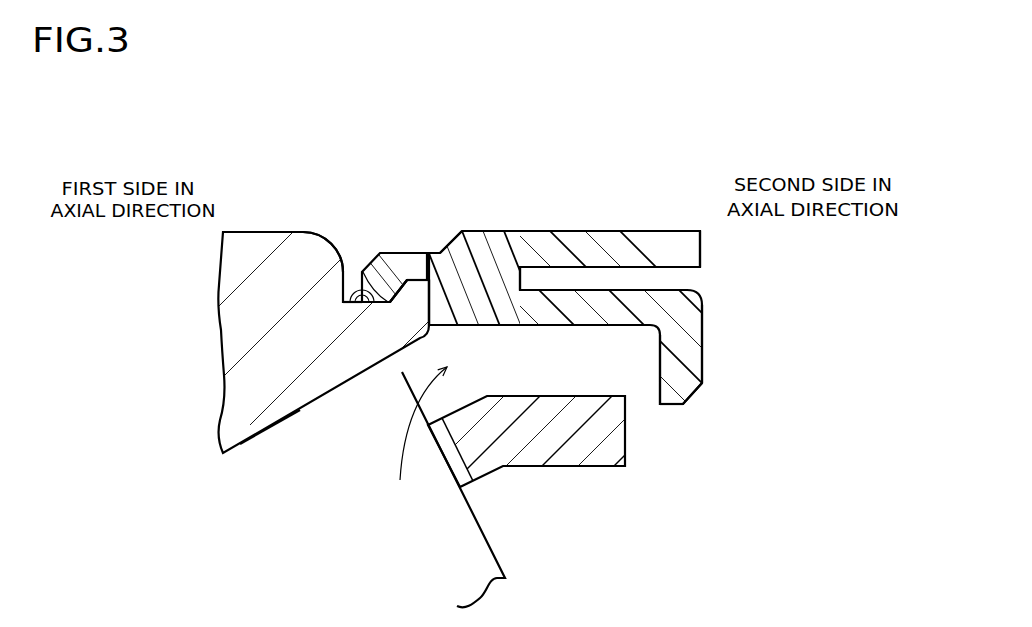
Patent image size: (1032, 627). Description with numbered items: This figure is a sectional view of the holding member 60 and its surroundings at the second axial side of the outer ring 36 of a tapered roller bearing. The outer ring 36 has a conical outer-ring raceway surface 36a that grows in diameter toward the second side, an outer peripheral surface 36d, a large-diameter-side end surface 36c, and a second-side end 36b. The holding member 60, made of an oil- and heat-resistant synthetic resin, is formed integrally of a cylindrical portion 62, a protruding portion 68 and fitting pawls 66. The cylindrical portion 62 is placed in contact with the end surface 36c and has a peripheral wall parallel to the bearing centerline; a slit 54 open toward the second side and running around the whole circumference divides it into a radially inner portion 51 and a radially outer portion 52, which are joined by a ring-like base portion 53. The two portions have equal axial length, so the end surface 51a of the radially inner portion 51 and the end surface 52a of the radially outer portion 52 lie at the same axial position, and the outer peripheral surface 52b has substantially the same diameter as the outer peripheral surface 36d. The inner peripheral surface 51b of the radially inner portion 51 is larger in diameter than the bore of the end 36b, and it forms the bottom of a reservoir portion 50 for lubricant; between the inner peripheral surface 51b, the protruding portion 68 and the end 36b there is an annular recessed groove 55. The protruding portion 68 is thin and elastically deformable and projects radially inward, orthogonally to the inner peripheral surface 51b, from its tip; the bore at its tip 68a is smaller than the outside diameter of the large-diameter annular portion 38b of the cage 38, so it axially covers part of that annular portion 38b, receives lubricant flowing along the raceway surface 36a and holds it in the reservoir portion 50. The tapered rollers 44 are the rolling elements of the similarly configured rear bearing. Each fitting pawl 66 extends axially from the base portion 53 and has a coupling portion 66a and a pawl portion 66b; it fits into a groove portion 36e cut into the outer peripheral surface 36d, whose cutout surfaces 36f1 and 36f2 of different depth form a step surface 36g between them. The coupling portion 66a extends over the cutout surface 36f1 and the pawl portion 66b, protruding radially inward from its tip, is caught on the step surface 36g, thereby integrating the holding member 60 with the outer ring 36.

The outer ring 36 is at (246, 258).
The outer-ring raceway surface 36a is at (272, 421).
The second-side end 36b is at (370, 334).
The large-diameter-side end surface 36c is at (430, 300).
The outer peripheral surface 36d is at (273, 232).
The groove portion 36e is at (351, 267).
The cutout surface 36f1 is at (423, 254).
The cutout surface 36f2 is at (350, 305).
The step surface 36g is at (352, 292).
The fitting pawl 66 is at (380, 255).
The coupling portion 66a is at (405, 253).
The pawl portion 66b is at (375, 281).
The holding member 60 is at (458, 230).
The cylindrical portion 62 is at (537, 133).
The base portion 53 is at (498, 268).
The radially outer portion 52 is at (572, 247).
The radially inner portion 51 is at (600, 310).
The axially-second-side end surface 52a is at (701, 250).
The outer peripheral surface 52b is at (644, 231).
The slit 54 is at (697, 278).
The axially-second-side end surface 51a is at (703, 333).
The inner peripheral surface 51b is at (593, 327).
The protruding portion 68 is at (704, 360).
The tip 68a is at (672, 405).
The cage 38 is at (627, 451).
The large-diameter annular portion 38b is at (594, 440).
The tapered rollers 44 is at (447, 533).
The reservoir portion 50 is at (417, 434).
The recessed groove 55 is at (523, 326).